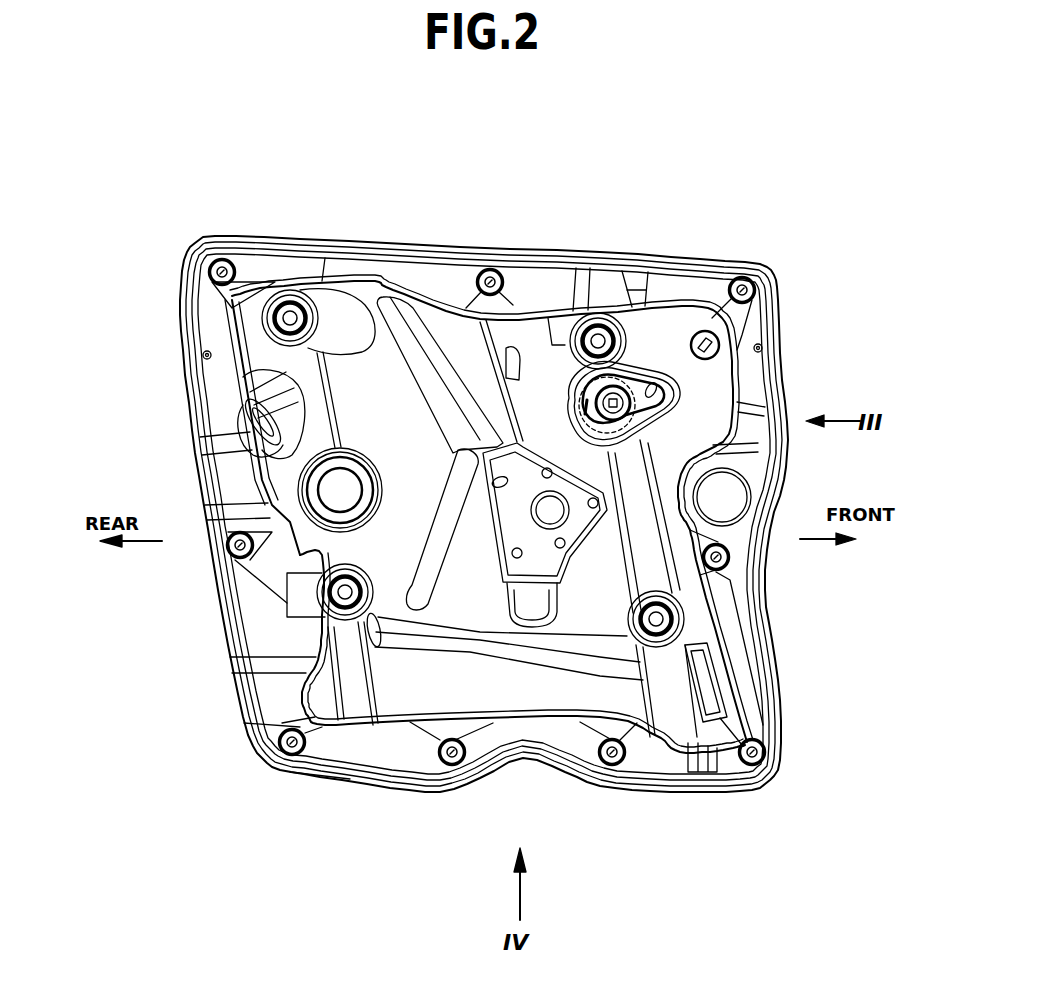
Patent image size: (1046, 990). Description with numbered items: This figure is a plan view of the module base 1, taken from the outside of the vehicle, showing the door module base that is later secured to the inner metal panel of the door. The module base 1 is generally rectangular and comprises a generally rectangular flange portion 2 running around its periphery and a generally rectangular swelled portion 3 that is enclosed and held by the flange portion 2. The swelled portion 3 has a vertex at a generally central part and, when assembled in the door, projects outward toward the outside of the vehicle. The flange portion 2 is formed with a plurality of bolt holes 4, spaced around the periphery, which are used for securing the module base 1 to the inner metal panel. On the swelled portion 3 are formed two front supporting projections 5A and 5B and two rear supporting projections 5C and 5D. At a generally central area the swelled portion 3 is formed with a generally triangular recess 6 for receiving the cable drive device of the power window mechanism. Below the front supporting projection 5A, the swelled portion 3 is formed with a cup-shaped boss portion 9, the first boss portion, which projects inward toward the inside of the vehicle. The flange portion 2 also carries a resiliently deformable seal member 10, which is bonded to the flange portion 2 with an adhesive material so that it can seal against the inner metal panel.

The module base 1 is at (304, 230).
The flange portion 2 is at (676, 286).
The swelled portion 3 is at (562, 342).
The bolt holes 4 is at (214, 262).
The front supporting projection 5A is at (598, 336).
The front supporting projection 5B is at (656, 625).
The rear supporting projection 5C is at (286, 321).
The rear supporting projection 5D is at (347, 598).
The triangular recess 6 is at (517, 523).
The cup-shaped boss portion 9 is at (668, 410).
The seal member 10 is at (318, 779).